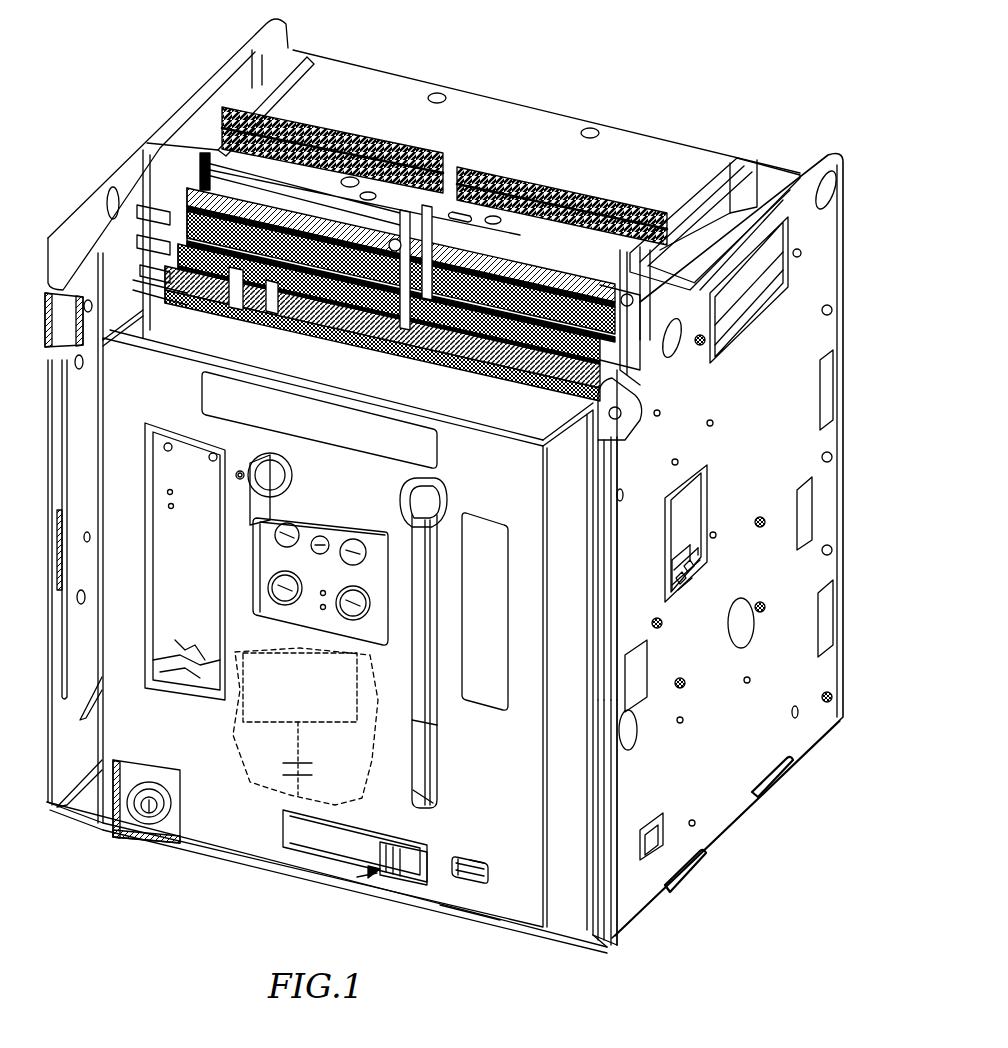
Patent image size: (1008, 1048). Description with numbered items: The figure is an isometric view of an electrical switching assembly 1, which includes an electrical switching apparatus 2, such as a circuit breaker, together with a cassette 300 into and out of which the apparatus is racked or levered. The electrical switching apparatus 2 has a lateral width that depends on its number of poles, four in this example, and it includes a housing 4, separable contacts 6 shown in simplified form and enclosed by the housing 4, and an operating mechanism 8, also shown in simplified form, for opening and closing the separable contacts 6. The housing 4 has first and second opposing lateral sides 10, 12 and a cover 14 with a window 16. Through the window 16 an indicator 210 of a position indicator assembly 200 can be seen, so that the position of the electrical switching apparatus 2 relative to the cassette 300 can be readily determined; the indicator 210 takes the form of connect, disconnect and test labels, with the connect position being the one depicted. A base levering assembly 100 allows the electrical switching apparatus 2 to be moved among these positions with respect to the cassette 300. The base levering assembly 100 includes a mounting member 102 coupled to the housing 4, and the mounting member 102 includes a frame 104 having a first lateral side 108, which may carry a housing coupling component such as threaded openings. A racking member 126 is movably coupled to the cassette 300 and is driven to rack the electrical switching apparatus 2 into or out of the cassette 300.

The electrical switching assembly 1 is at (633, 98).
The electrical switching apparatus 2 is at (142, 888).
The housing 4 is at (220, 846).
The separable contacts 6 is at (280, 765).
The operating mechanism 8 is at (243, 700).
The first lateral side 10 is at (93, 720).
The second lateral side 12 is at (547, 722).
The cover 14 is at (350, 496).
The window 16 is at (452, 870).
The base levering assembly 100 is at (345, 890).
The mounting member 102 is at (592, 773).
The frame 104 is at (592, 582).
The first lateral side of the frame 108 is at (693, 495).
The racking member 126 is at (683, 570).
The position indicator assembly 200 is at (473, 893).
The indicator 210 is at (485, 866).
The cassette 300 is at (724, 812).